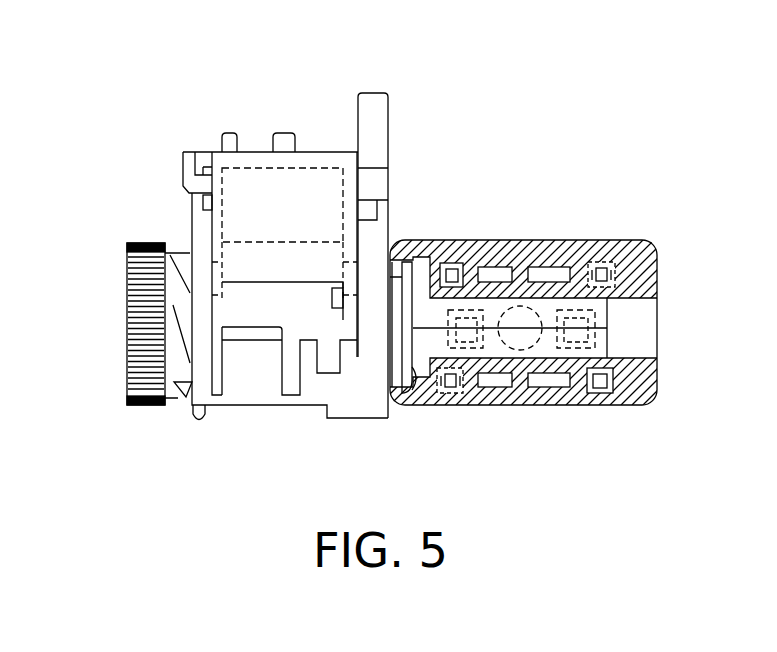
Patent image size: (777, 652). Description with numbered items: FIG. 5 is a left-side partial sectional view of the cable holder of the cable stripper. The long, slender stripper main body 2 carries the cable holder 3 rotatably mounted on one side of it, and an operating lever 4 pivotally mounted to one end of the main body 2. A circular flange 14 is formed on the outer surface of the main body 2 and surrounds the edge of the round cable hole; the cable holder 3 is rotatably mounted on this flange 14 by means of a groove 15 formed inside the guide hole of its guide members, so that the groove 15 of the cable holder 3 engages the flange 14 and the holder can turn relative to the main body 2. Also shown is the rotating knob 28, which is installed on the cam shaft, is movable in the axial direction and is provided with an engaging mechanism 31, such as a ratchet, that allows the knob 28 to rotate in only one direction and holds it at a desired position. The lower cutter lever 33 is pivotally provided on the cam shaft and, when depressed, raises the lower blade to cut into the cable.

The stripper main body 2 is at (253, 398).
The cable holder 3 is at (622, 240).
The operating lever 4 is at (250, 160).
The circular flange 14 is at (407, 262).
The groove 15 is at (413, 372).
The rotating knob 28 is at (127, 360).
The engaging mechanism 31 is at (178, 398).
The lower cutter lever 33 is at (373, 93).